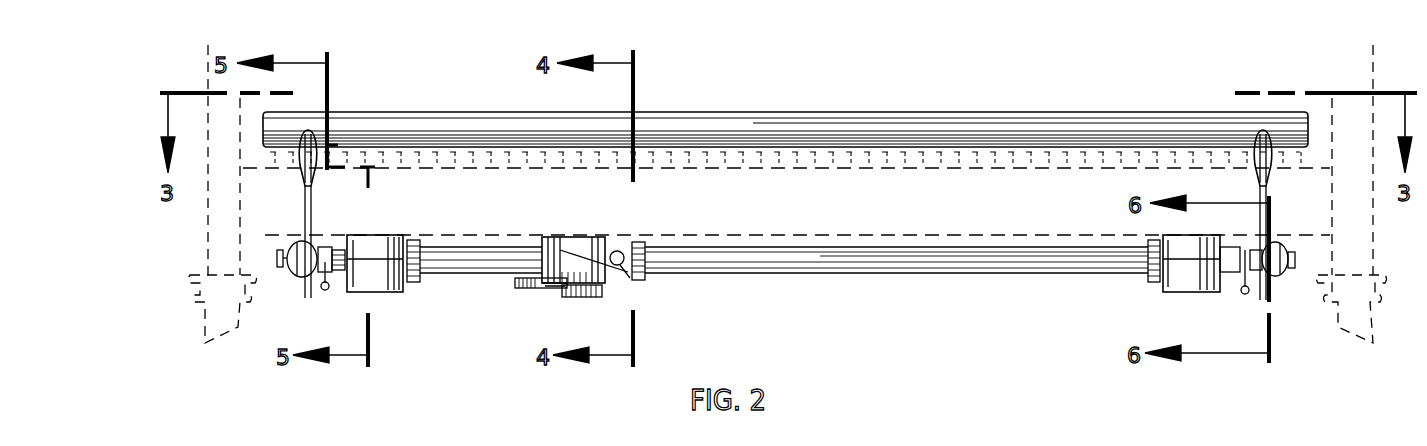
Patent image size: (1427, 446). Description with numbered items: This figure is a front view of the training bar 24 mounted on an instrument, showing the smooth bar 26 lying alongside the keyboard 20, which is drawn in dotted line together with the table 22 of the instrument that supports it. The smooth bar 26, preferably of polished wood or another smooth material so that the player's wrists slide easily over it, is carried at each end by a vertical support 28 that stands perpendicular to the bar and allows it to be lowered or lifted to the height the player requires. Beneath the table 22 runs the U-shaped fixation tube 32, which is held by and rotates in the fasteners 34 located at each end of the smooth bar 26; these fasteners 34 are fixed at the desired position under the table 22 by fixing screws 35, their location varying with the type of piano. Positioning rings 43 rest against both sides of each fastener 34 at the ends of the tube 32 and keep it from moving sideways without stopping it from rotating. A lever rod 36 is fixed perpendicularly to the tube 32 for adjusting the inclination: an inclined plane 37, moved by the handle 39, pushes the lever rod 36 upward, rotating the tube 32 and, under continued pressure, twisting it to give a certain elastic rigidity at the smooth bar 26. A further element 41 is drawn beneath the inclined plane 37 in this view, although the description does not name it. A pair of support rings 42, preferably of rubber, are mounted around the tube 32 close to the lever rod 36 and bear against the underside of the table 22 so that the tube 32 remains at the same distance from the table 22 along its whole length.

The keyboard 20 is at (492, 163).
The table 22 is at (263, 240).
The training bar 24 is at (868, 105).
The smooth bar 26 is at (297, 122).
The vertical support 28 is at (1263, 203).
The fixation tube 32 is at (792, 270).
The fastener 34 is at (380, 292).
The fixing screw 35 is at (553, 286).
The lever rod 36 is at (623, 272).
The inclined plane 37 is at (582, 240).
The handle 39 is at (517, 290).
The clamp 41 is at (581, 297).
The support ring 42 is at (640, 240).
The positioning ring 43 is at (415, 240).